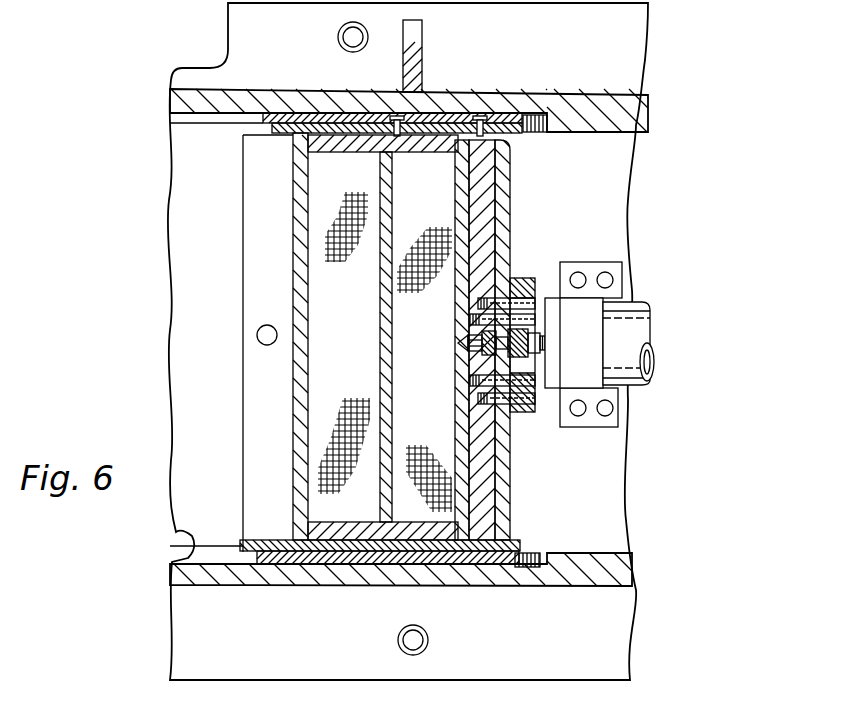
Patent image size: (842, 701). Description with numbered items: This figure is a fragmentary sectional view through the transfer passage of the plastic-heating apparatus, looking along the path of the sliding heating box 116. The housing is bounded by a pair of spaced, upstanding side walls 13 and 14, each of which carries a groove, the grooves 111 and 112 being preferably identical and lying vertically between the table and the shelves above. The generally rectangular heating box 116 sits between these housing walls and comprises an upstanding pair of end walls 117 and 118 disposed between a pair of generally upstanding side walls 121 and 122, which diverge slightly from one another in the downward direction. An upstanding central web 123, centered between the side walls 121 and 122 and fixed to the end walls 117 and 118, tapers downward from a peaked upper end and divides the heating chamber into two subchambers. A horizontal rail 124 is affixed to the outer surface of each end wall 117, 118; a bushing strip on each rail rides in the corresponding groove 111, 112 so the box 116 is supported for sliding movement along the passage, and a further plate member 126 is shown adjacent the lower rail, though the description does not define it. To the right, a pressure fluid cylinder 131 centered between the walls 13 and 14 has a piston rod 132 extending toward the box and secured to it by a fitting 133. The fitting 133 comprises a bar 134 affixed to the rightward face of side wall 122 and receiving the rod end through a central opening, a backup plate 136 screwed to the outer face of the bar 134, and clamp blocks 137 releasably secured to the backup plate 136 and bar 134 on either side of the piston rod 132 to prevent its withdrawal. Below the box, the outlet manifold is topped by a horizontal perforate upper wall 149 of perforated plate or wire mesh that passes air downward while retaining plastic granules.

The side wall 13 is at (556, 582).
The side wall 14 is at (573, 100).
The groove 111 is at (168, 538).
The groove 112 is at (236, 124).
The heating box 116 is at (272, 474).
The end wall 117 is at (320, 522).
The end wall 118 is at (327, 157).
The side wall 121 is at (303, 243).
The side wall 122 is at (466, 200).
The central web 123 is at (382, 345).
The horizontal rail 124 is at (287, 540).
The plate 126 is at (340, 582).
The pressure fluid cylinder 131 is at (633, 330).
The piston rod 132 is at (548, 334).
The fitting 133 is at (560, 437).
The bar 134 is at (490, 213).
The backup plate 136 is at (500, 234).
The clamp blocks 137 is at (502, 412).
The perforate upper wall 149 is at (340, 403).